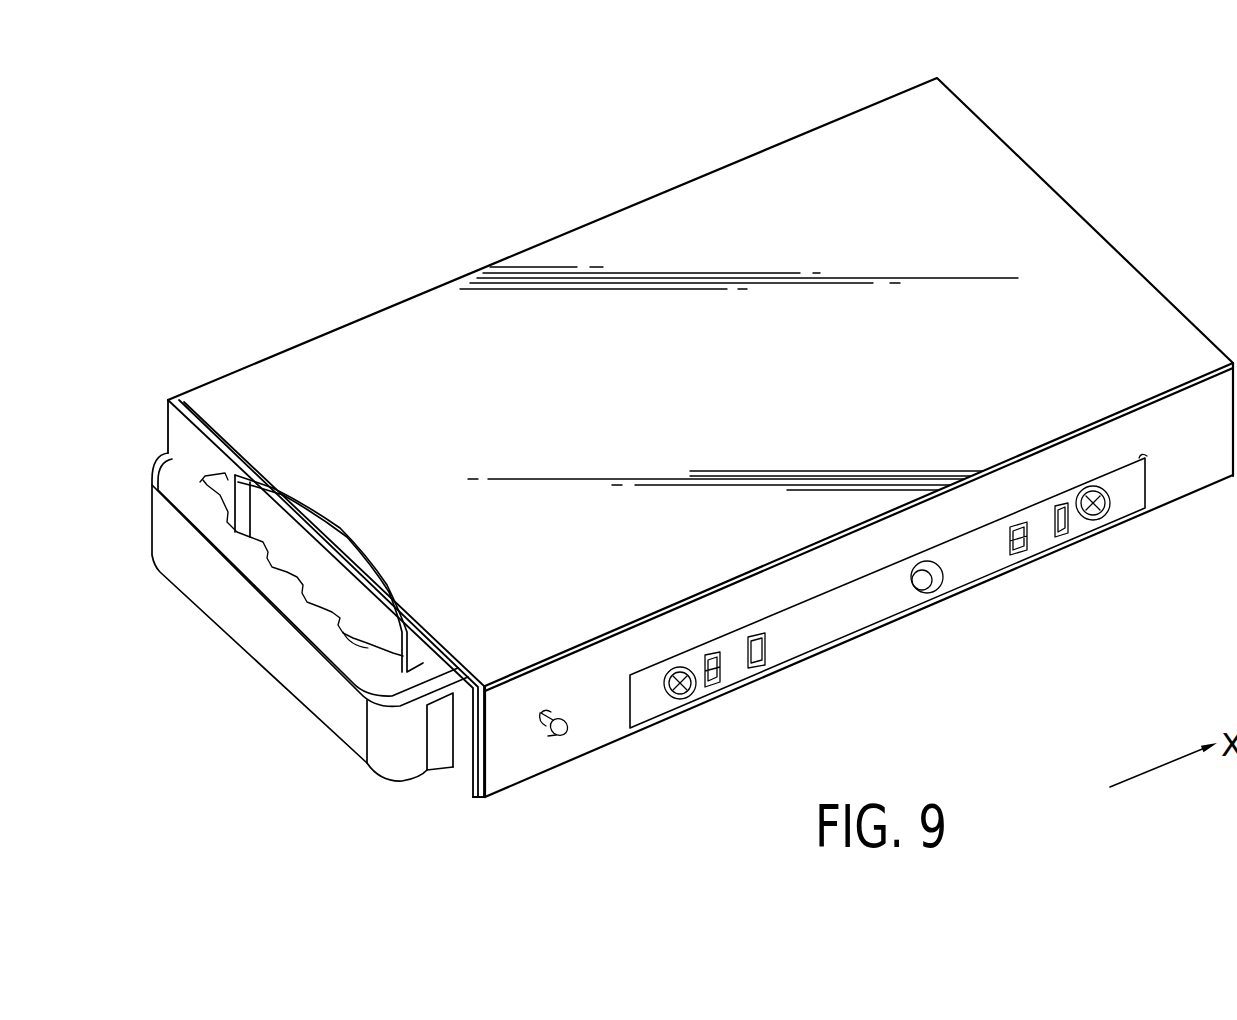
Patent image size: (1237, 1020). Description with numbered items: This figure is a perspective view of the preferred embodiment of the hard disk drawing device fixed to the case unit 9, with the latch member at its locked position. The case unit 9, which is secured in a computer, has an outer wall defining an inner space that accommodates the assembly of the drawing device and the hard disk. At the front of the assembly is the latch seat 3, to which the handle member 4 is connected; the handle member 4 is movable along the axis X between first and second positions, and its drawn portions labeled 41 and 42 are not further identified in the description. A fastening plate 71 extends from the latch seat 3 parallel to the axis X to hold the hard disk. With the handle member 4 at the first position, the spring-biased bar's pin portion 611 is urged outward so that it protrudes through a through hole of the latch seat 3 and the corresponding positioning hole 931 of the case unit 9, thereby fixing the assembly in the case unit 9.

The case unit 9 is at (758, 148).
The latch seat 3 is at (452, 808).
The handle member 4 is at (310, 662).
The handle body 41 is at (240, 653).
The handle end block 42 is at (437, 752).
The fastening plate 71 is at (978, 563).
The pin portion 611 is at (547, 738).
The positioning hole 931 is at (540, 712).